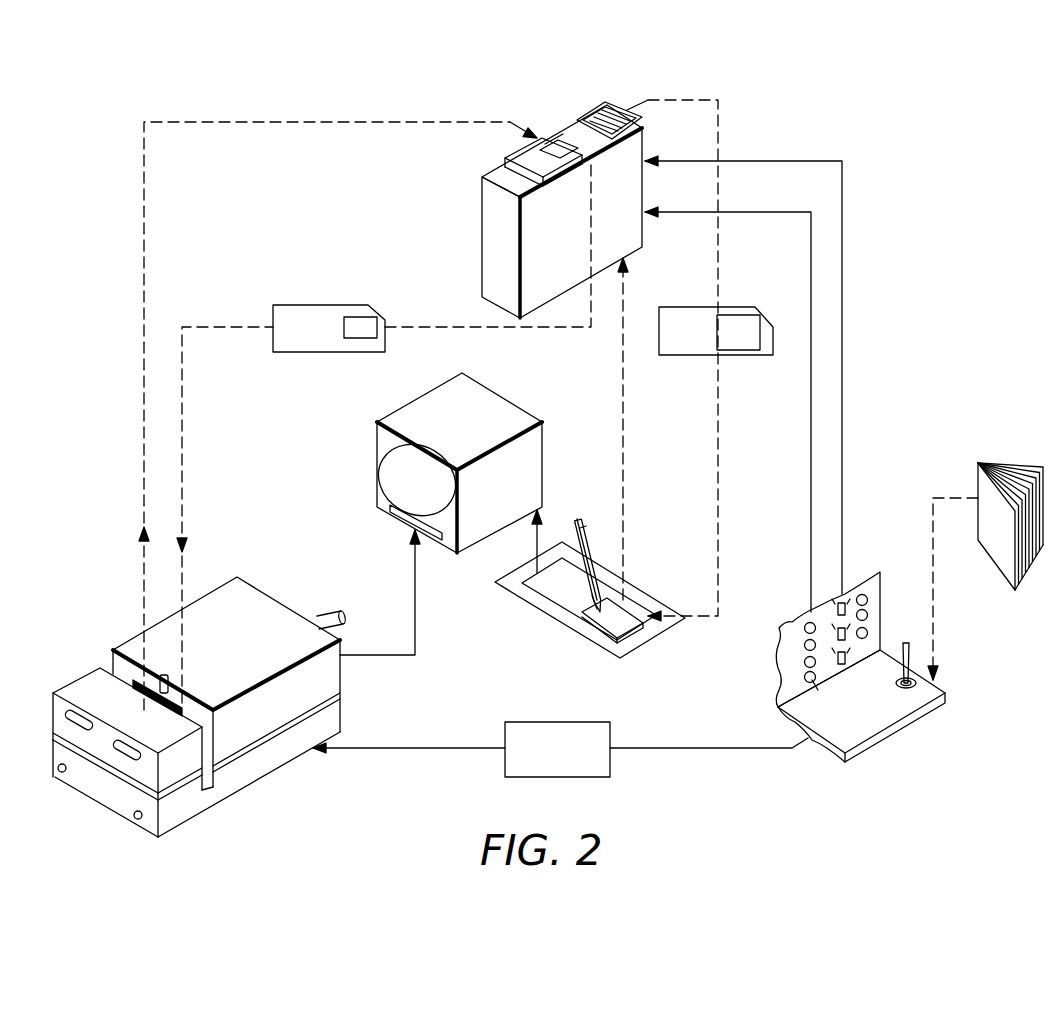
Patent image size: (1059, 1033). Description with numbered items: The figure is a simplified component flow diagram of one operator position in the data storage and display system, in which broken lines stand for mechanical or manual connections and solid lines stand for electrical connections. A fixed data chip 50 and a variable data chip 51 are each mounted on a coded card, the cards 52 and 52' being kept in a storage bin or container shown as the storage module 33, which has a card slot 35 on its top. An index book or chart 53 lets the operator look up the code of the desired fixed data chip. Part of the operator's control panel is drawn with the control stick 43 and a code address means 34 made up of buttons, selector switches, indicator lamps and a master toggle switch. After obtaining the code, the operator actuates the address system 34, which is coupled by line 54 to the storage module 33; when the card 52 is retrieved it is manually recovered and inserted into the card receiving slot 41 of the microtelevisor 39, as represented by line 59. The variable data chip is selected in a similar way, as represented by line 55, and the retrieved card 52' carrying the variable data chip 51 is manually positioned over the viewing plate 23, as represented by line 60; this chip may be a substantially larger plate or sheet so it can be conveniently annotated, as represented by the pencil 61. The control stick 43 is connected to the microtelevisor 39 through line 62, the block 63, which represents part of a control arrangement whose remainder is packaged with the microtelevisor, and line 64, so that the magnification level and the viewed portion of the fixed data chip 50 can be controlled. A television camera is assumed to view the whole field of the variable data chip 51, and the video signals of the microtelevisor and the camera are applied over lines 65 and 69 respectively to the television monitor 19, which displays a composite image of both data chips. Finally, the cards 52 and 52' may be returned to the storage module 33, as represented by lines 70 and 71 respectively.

The television monitor 19 is at (461, 436).
The viewing plate 23 is at (512, 594).
The storage module or bin 33 is at (624, 220).
The address system 34 is at (778, 650).
The card slot 35 is at (561, 134).
The microtelevisor 39 is at (238, 634).
The card receiving slot 41 is at (107, 660).
The control stick 43 is at (907, 640).
The fixed data chip 50 is at (356, 317).
The variable data chip 51 is at (748, 315).
The coded card 52 is at (328, 314).
The coded card 52' is at (715, 317).
The index book or chart 53 is at (1017, 464).
The line 54 is at (811, 465).
The line 55 is at (842, 465).
The line 59 is at (182, 458).
The line 60 is at (718, 466).
The pencil 61 is at (577, 537).
The line 62 is at (699, 748).
The block 63 is at (552, 721).
The line 64 is at (406, 747).
The line 65 is at (415, 584).
The line 69 is at (537, 542).
The line 70 is at (142, 460).
The line 71 is at (623, 462).